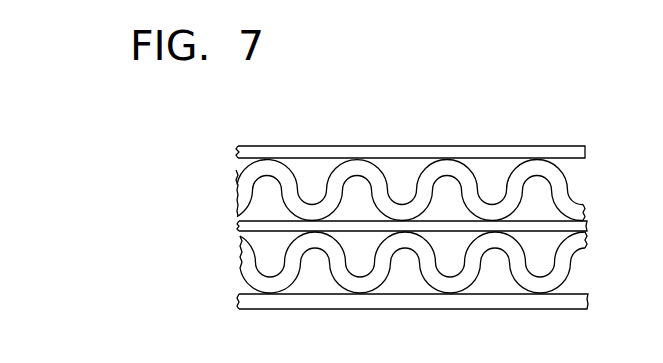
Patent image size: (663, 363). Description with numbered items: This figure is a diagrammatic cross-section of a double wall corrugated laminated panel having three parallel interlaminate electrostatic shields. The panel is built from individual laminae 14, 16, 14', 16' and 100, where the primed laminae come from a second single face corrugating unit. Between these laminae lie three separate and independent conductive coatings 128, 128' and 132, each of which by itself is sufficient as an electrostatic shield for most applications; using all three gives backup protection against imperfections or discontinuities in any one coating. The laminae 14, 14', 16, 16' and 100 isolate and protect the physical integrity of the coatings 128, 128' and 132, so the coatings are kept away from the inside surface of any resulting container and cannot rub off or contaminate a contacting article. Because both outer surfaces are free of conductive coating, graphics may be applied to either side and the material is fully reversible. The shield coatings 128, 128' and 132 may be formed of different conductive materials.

The lamina 100 is at (577, 307).
The lamina 16 is at (431, 156).
The electrostatic shield coating 128 is at (292, 140).
The lamina 14 is at (431, 189).
The lamina 16' is at (434, 230).
The electrostatic shield coating 128' is at (226, 254).
The lamina 14' is at (436, 262).
The electrostatic shield coating 132 is at (303, 290).